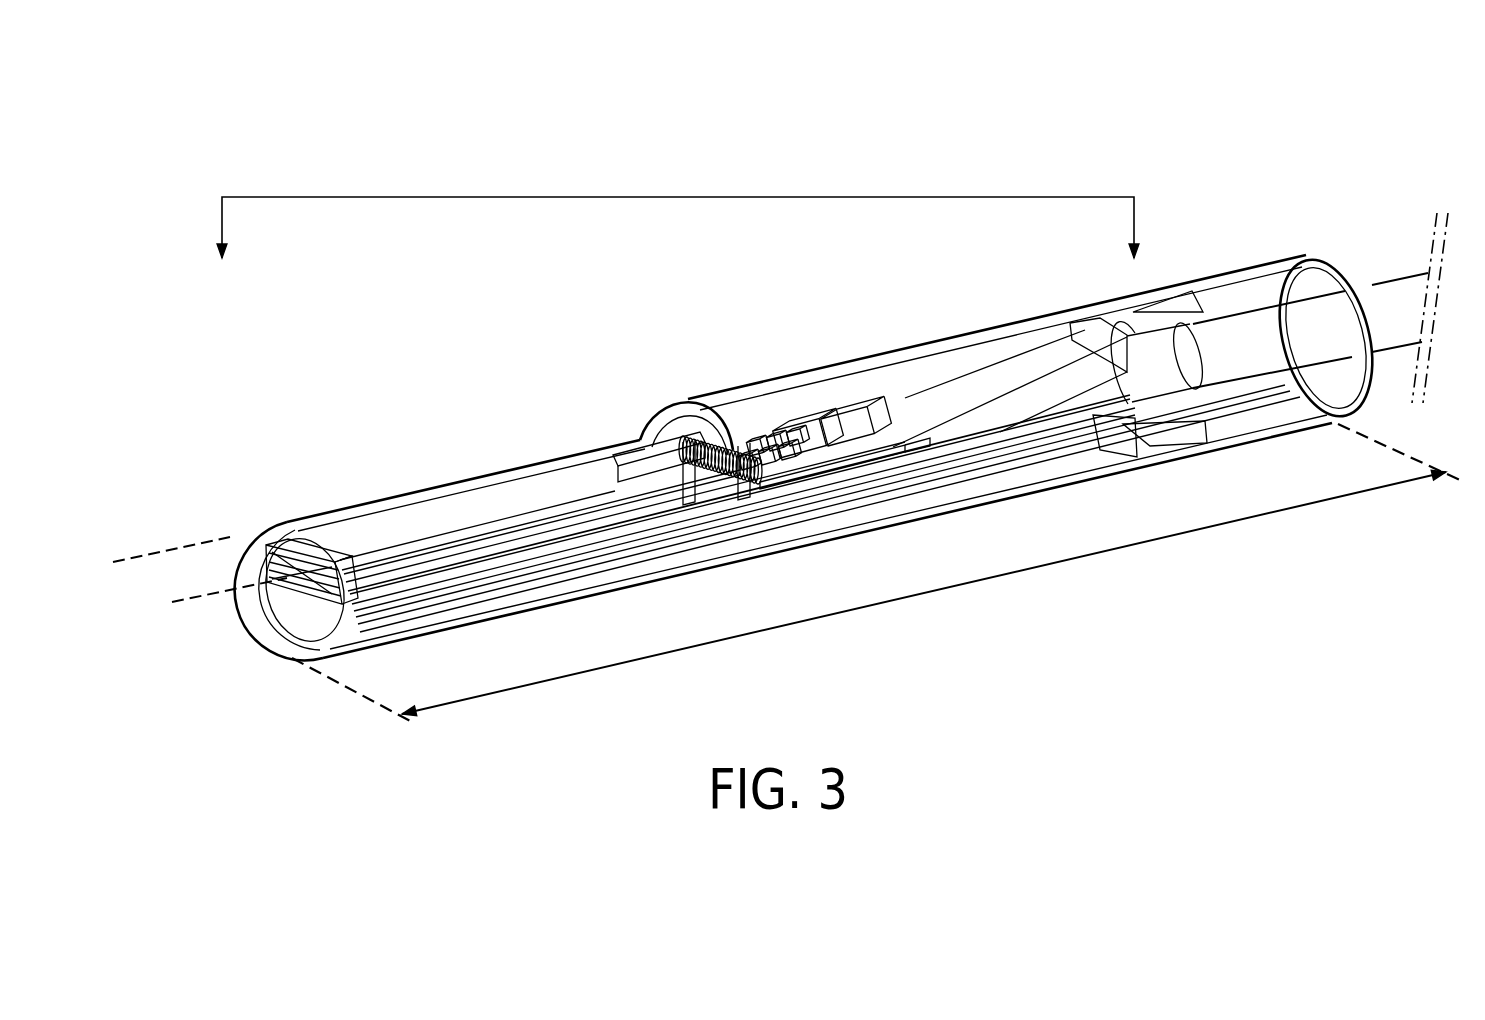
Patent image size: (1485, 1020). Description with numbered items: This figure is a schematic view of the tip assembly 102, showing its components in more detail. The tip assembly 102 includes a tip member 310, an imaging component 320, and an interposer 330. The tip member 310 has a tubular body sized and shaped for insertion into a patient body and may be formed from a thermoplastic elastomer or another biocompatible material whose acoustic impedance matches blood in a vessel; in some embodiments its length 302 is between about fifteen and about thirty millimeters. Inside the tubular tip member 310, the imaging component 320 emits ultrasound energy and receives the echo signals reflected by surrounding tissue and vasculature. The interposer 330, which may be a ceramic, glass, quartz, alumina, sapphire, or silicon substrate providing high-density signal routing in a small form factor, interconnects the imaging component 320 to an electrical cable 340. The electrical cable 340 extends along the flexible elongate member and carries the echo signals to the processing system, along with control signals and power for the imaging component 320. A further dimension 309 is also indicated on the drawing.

The tip assembly 102 is at (1202, 128).
The length 302 is at (877, 573).
The length of inner housing region 309 is at (678, 213).
The tip member 310 is at (356, 518).
The imaging component 320 is at (512, 488).
The interposer 330 is at (908, 466).
The electrical cable 340 is at (1388, 262).